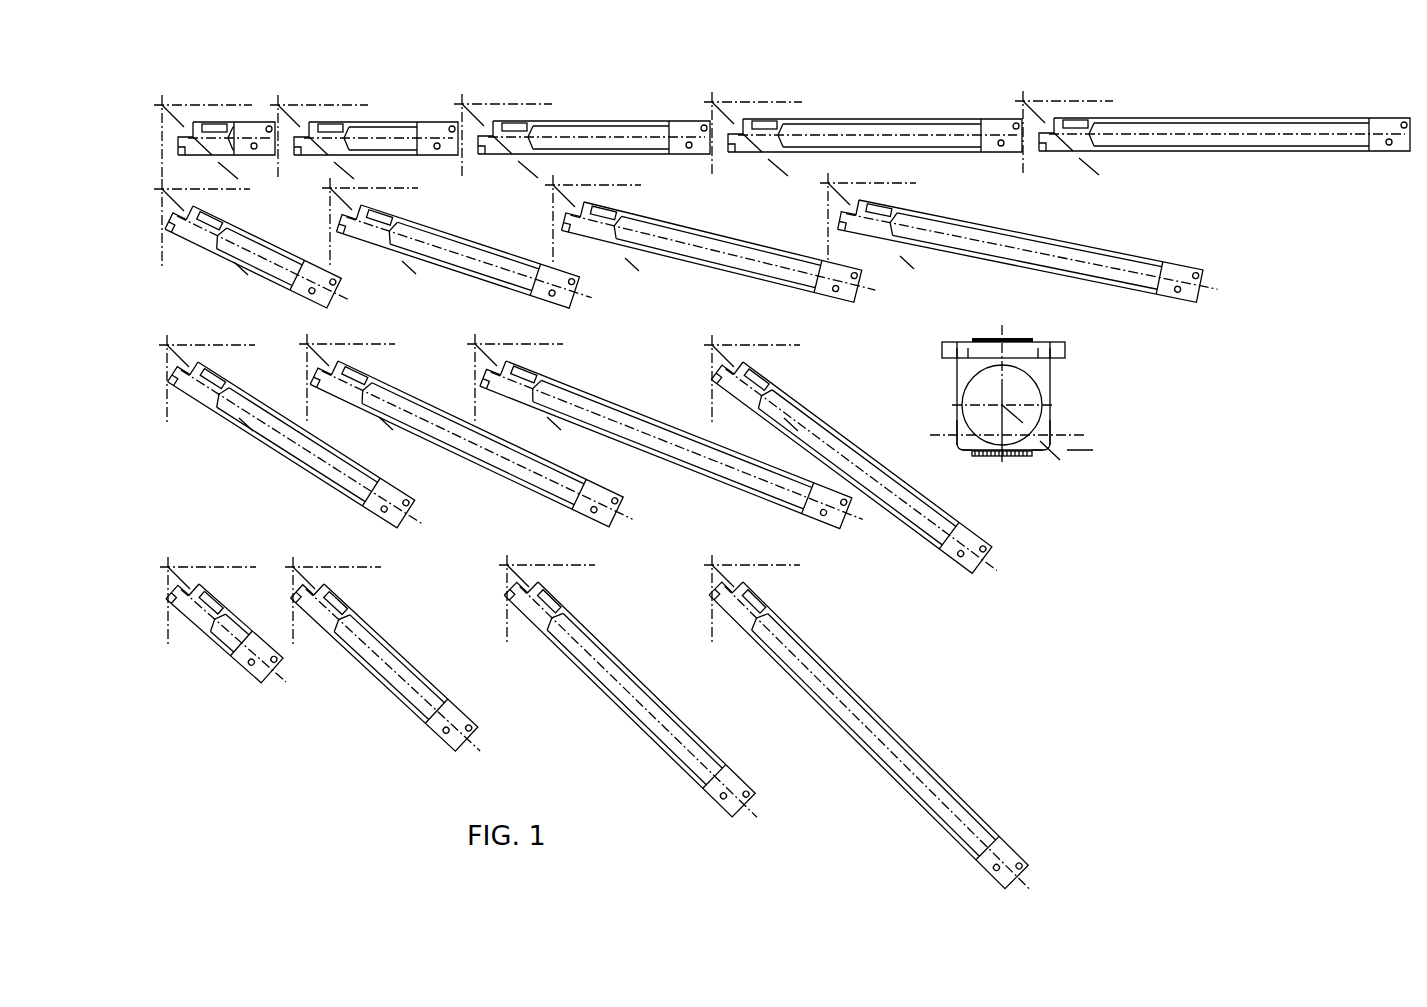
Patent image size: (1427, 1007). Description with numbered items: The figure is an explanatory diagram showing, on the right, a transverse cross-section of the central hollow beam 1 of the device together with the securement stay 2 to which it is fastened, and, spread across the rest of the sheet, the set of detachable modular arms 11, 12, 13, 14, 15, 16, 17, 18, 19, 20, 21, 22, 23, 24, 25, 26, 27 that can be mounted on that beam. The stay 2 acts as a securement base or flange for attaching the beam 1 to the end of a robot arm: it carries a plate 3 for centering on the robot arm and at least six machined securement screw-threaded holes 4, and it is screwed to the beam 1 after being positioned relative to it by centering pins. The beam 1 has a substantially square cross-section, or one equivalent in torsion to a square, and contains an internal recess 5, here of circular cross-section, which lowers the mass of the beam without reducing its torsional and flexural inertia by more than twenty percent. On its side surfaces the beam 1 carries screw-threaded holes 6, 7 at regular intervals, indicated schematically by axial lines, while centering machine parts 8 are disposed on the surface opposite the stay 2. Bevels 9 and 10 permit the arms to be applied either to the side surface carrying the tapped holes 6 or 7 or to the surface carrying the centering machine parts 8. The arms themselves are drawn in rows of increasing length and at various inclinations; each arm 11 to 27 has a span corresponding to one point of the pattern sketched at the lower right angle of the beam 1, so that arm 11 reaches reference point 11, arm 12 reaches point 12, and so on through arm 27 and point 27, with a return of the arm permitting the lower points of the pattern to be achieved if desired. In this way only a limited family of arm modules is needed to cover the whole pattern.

The hollow beam 1 is at (1060, 385).
The securement stay 2 is at (1063, 350).
The plate 3 is at (1000, 338).
The securement screw-threaded holes 4 is at (953, 340).
The internal recess 5 is at (995, 400).
The screw-threaded holes 6 is at (953, 428).
The screw-threaded holes 7 is at (1057, 428).
The centering machine parts 8 is at (990, 457).
The bevel 9 is at (957, 455).
The bevel 10 is at (1043, 445).
The arm module 11 is at (223, 116).
The arm module 12 is at (374, 113).
The arm module 13 is at (588, 113).
The arm module 14 is at (853, 110).
The arm module 15 is at (1173, 108).
The arm module 16 is at (276, 240).
The arm module 17 is at (488, 240).
The arm module 18 is at (736, 238).
The arm module 19 is at (1133, 250).
The arm module 20 is at (261, 385).
The arm module 21 is at (413, 392).
The arm module 22 is at (624, 400).
The arm module 23 is at (823, 405).
The arm module 24 is at (244, 610).
The arm module 25 is at (418, 648).
The arm module 26 is at (626, 648).
The arm module 27 is at (839, 663).